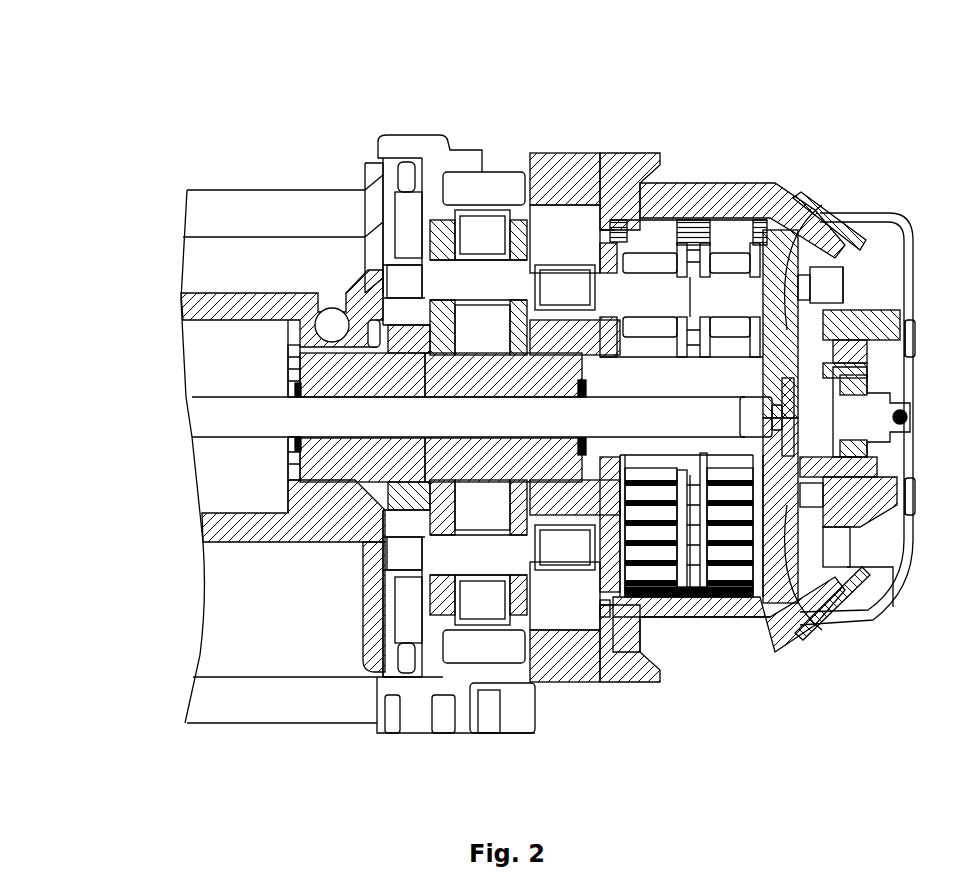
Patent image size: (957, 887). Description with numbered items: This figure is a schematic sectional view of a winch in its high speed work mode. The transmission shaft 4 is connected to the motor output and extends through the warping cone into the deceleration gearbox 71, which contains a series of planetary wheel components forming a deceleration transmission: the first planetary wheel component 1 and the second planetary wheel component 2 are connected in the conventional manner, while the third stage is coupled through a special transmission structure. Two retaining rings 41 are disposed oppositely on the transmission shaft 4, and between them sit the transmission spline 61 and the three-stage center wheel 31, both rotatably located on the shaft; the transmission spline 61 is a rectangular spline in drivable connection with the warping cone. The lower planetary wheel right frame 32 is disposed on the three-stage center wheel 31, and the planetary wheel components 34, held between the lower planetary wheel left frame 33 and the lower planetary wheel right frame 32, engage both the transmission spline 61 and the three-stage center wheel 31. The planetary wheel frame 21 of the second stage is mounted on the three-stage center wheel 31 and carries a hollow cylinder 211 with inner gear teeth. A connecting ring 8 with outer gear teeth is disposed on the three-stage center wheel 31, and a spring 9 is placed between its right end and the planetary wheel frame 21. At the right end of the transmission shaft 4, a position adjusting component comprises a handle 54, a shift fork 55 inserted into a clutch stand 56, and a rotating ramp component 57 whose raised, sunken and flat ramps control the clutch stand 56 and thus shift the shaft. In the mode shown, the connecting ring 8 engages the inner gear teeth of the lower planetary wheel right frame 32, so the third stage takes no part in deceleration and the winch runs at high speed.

The first planetary wheel component 1 is at (733, 572).
The second planetary wheel component 2 is at (652, 573).
The planetary wheel frame 21 is at (603, 228).
The hollow cylinder 211 is at (565, 265).
The three-stage center wheel 31 is at (485, 482).
The lower planetary wheel right frame 32 is at (493, 310).
The lower planetary wheel left frame 33 is at (418, 262).
The planetary wheel components 34 is at (470, 272).
The transmission shaft 4 is at (258, 413).
The retaining rings 41 is at (285, 390).
The handle 54 is at (893, 543).
The shift fork 55 is at (905, 245).
The clutch stand 56 is at (847, 250).
The rotating ramp component 57 is at (862, 258).
The transmission spline 61 is at (367, 460).
The deceleration gearbox 71 is at (668, 185).
The connecting ring 8 is at (523, 448).
The spring 9 is at (582, 470).